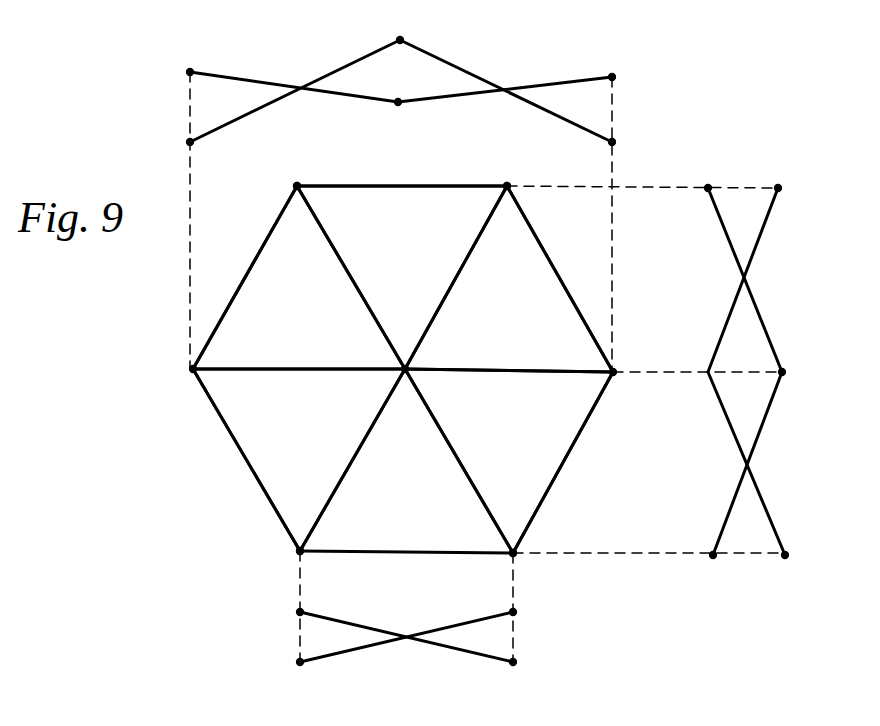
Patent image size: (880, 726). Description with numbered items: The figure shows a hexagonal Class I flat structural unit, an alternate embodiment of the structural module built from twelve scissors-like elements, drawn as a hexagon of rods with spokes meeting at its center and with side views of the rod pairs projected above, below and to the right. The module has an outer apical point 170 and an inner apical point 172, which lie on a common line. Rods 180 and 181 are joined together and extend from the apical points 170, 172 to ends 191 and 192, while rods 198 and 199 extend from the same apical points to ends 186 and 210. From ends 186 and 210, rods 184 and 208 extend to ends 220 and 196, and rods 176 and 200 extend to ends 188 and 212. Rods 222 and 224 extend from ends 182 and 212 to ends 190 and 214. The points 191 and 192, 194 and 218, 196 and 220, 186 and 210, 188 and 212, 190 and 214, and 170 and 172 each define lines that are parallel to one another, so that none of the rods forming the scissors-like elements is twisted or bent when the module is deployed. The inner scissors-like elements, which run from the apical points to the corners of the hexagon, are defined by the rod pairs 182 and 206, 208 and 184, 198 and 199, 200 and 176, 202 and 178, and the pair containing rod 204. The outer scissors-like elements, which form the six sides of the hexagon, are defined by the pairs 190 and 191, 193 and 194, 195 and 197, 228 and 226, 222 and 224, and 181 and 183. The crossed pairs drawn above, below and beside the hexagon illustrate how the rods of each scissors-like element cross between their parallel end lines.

The outer apical point 170 is at (397, 40).
The inner apical point 172 is at (410, 92).
The rod 176 is at (463, 462).
The rod 178 is at (350, 467).
The rod 180 is at (260, 82).
The rod 181 is at (213, 128).
The rod 182 is at (323, 230).
The rod 183 is at (253, 475).
The rod 184 is at (478, 242).
The end 186 is at (615, 75).
The end 188 is at (785, 558).
The end 190 is at (252, 265).
The end 191 is at (188, 142).
The end 192 is at (188, 72).
The rod 193 is at (375, 185).
The rod 194 is at (298, 184).
The rod 195 is at (533, 227).
The end 196 is at (780, 152).
The rod 197 is at (555, 268).
The rod 198 is at (445, 60).
The rod 199 is at (542, 373).
The rod 200 is at (480, 500).
The rod 202 is at (355, 457).
The rod 204 is at (347, 367).
The rod 206 is at (333, 247).
The rod 208 is at (465, 257).
The end 210 is at (615, 142).
The end 212 is at (517, 555).
The end 214 is at (297, 553).
The point 218 is at (278, 161).
The end 220 is at (508, 184).
The rod 222 is at (382, 648).
The rod 224 is at (458, 652).
The rod 226 is at (543, 502).
The rod 228 is at (578, 440).